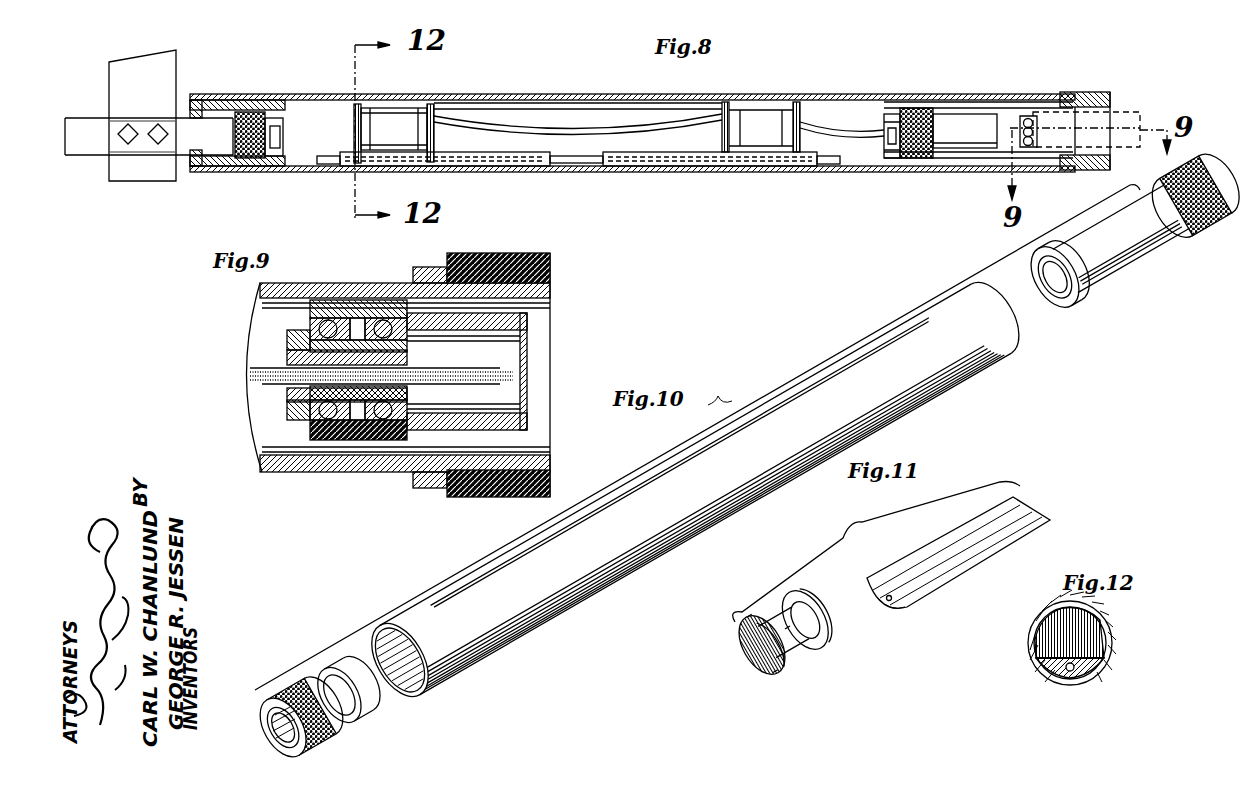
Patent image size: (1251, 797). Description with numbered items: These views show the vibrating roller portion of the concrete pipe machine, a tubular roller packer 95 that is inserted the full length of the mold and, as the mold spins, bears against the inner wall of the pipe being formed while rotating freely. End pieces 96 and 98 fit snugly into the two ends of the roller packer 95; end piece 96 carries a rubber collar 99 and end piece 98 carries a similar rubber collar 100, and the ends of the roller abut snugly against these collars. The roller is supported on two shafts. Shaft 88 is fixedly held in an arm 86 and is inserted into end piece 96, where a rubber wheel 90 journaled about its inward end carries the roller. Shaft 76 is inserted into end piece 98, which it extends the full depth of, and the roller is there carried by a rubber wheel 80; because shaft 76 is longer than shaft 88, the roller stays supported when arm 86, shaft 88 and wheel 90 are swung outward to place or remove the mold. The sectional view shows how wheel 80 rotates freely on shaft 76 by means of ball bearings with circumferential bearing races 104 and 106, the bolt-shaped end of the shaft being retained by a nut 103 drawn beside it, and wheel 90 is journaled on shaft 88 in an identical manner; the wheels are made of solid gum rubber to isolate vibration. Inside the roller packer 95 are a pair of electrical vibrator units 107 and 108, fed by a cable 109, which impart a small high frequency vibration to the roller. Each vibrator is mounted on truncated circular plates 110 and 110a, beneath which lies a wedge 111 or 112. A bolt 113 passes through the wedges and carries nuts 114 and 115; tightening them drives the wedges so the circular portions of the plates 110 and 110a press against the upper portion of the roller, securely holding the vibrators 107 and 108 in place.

In FIG. 8, the shaft 76 is at (950, 120).
In FIG. 9, the shaft 76 is at (503, 414).
In FIG. 8, the wheel 80 is at (915, 105).
In FIG. 9, the wheel 80 is at (350, 296).
In FIG. 8, the arm 86 is at (170, 63).
In FIG. 8, the shaft 88 is at (88, 145).
In FIG. 8, the wheel 90 is at (275, 106).
In FIG. 8, the roller packer 95 is at (760, 95).
In FIG. 10, the roller packer 95 is at (950, 370).
In FIG. 12, the roller packer 95 is at (1033, 650).
In FIG. 8, the end piece 96 is at (250, 100).
In FIG. 10, the end piece 96 is at (352, 728).
In FIG. 8, the end piece 98 is at (990, 100).
In FIG. 9, the end piece 98 is at (398, 375).
In FIG. 10, the end piece 98 is at (1140, 247).
In FIG. 8, the rubber collar 99 is at (215, 172).
In FIG. 10, the rubber collar 99 is at (327, 741).
In FIG. 8, the rubber collar 100 is at (1085, 95).
In FIG. 9, the rubber collar 100 is at (500, 258).
In FIG. 10, the rubber collar 100 is at (1227, 227).
In FIG. 8, the nut 103 is at (888, 163).
In FIG. 9, the nut 103 is at (310, 393).
In FIG. 9, the bearing race 104 is at (375, 443).
In FIG. 9, the bearing race 106 is at (313, 422).
In FIG. 8, the electrical vibrator unit 107 is at (395, 118).
In FIG. 8, the electrical vibrator unit 108 is at (758, 102).
In FIG. 11, the electrical vibrator unit 108 is at (803, 648).
In FIG. 8, the cable 109 is at (580, 127).
In FIG. 8, the truncated circular plate 110 is at (357, 110).
In FIG. 11, the truncated circular plate 110 is at (752, 637).
In FIG. 12, the truncated circular plate 110 is at (1087, 634).
In FIG. 8, the truncated circular plate 110a is at (433, 110).
In FIG. 11, the truncated circular plate 110a is at (820, 597).
In FIG. 8, the wedge 111 is at (518, 162).
In FIG. 12, the wedge 111 is at (1083, 673).
In FIG. 8, the wedge 112 is at (758, 165).
In FIG. 11, the wedge 112 is at (975, 505).
In FIG. 8, the bolt 113 is at (570, 165).
In FIG. 12, the bolt 113 is at (1070, 675).
In FIG. 8, the nut 114 is at (825, 166).
In FIG. 8, the nut 115 is at (328, 167).